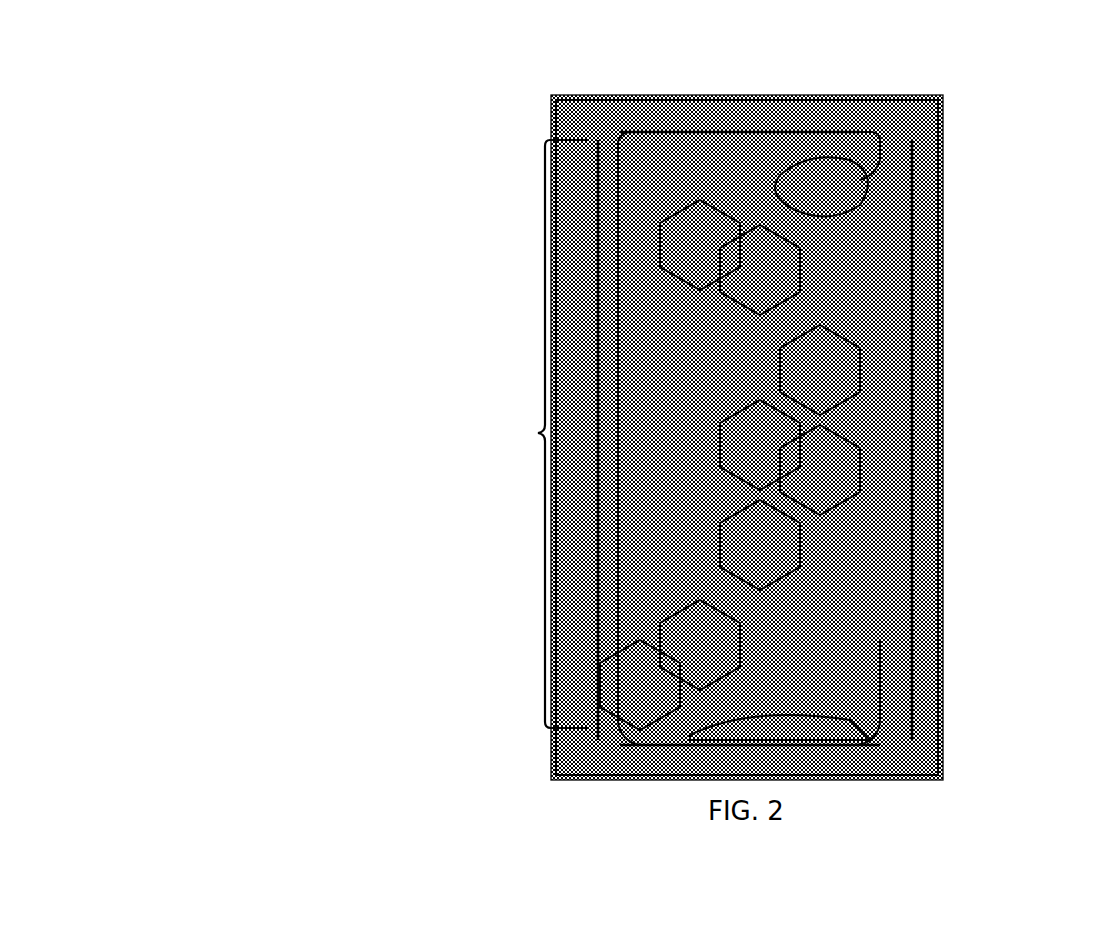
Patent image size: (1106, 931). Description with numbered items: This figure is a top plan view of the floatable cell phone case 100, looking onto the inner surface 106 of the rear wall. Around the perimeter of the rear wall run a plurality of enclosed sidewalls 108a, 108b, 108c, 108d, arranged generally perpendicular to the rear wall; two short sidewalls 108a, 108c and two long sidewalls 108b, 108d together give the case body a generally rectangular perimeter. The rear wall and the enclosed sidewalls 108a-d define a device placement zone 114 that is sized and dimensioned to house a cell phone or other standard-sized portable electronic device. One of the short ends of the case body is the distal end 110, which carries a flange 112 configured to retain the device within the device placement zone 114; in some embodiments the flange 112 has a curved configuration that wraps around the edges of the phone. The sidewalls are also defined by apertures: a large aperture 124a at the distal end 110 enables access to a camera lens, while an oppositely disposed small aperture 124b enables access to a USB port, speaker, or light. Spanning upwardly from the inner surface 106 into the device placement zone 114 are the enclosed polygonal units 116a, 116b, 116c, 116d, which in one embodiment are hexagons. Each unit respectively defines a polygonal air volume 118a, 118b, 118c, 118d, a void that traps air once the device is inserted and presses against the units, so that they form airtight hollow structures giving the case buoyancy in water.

The floatable cell phone case 100 is at (166, 210).
The inner surface 106 is at (630, 687).
The sidewall 108a is at (786, 106).
The sidewall 108b is at (913, 594).
The sidewall 108c is at (822, 748).
The sidewall 108d is at (598, 180).
The distal end 110 is at (699, 103).
The flange 112 is at (856, 116).
The device placement zone 114 is at (538, 433).
The enclosed polygonal unit 116a is at (790, 314).
The enclosed polygonal unit 116b is at (830, 400).
The enclosed polygonal unit 116c is at (822, 508).
The enclosed polygonal unit 116d is at (680, 693).
The polygonal air volume 118a is at (767, 297).
The polygonal air volume 118b is at (822, 442).
The polygonal air volume 118c is at (817, 533).
The polygonal air volume 118d is at (656, 692).
The large aperture 124a is at (870, 186).
The small aperture 124b is at (725, 735).